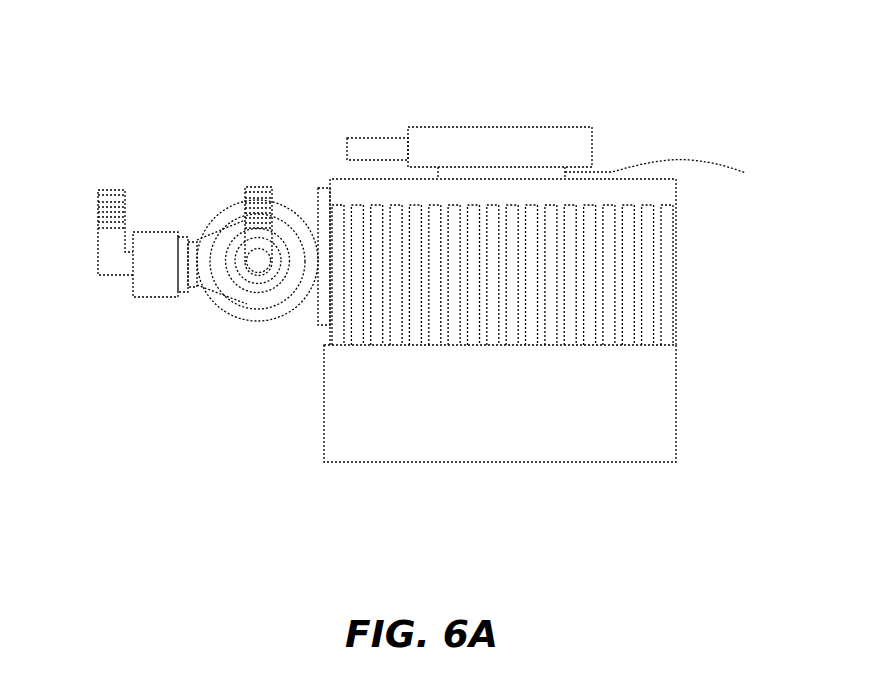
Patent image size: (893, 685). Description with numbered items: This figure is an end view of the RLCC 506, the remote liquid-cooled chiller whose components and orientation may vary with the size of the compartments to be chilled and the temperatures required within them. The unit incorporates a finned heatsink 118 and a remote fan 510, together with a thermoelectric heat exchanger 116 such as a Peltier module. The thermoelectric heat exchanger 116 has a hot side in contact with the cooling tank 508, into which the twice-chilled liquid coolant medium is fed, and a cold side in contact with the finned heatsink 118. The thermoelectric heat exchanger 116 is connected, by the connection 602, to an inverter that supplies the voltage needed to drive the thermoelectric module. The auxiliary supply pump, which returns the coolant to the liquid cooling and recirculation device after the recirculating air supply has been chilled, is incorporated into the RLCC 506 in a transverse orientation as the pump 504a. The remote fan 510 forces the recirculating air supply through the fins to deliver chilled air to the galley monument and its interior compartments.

The RLCC 506 is at (82, 76).
The thermoelectric heat exchanger 116 is at (468, 173).
The finned heatsink 118 is at (600, 255).
The cooling tank 508 is at (482, 138).
The remote fan 510 is at (635, 433).
The connection to inverter 602 is at (705, 163).
The auxiliary supply pump in transverse orientation 504a is at (255, 315).